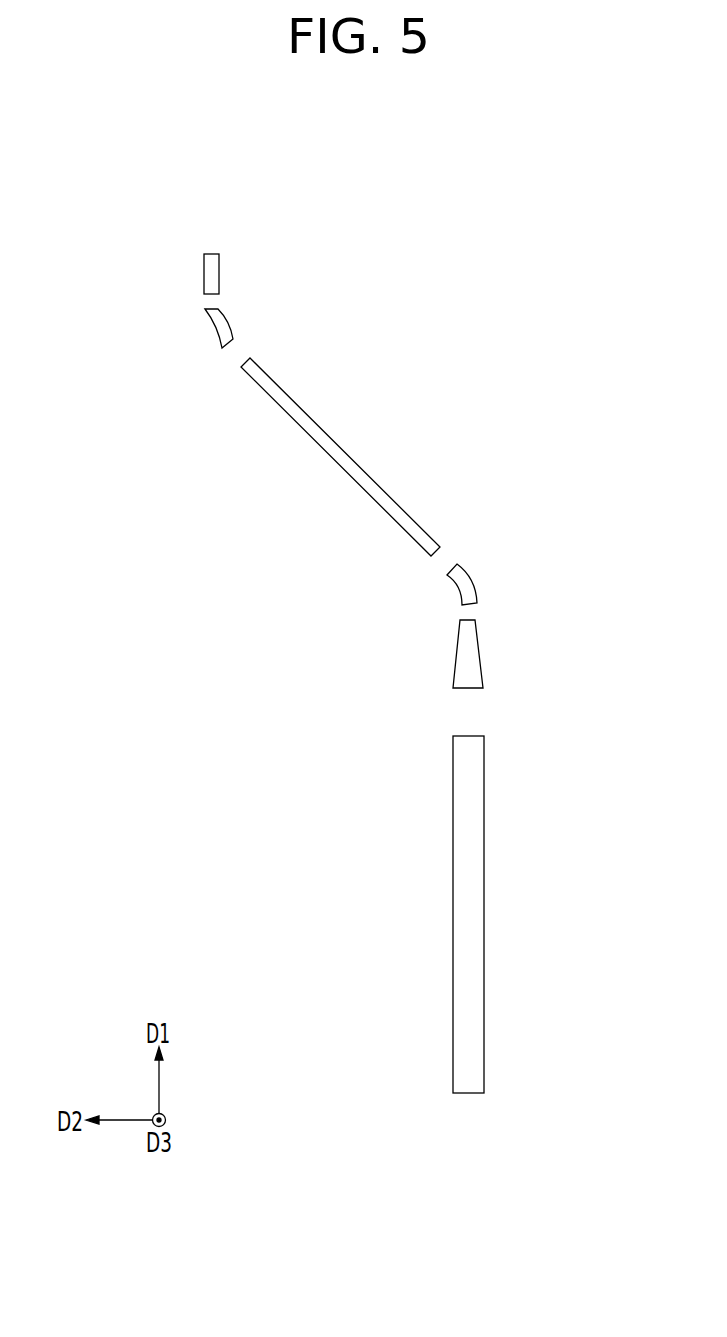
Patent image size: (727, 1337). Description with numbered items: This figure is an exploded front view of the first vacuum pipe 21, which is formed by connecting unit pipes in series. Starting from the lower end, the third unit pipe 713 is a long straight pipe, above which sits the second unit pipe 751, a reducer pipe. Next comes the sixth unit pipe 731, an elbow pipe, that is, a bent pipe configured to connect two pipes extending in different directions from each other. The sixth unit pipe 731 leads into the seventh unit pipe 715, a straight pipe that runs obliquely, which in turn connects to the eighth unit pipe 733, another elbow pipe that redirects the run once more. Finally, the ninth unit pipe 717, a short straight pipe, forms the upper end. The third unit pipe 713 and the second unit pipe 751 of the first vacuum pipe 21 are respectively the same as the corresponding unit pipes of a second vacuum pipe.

The first vacuum pipe 21 is at (605, 258).
The ninth unit pipe 717 is at (214, 273).
The eighth unit pipe 733 is at (216, 327).
The seventh unit pipe 715 is at (333, 453).
The sixth unit pipe 731 is at (462, 583).
The second unit pipe 751 is at (471, 657).
The third unit pipe 713 is at (472, 913).